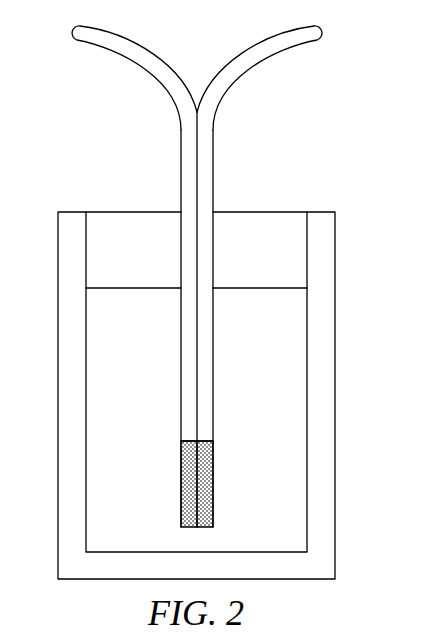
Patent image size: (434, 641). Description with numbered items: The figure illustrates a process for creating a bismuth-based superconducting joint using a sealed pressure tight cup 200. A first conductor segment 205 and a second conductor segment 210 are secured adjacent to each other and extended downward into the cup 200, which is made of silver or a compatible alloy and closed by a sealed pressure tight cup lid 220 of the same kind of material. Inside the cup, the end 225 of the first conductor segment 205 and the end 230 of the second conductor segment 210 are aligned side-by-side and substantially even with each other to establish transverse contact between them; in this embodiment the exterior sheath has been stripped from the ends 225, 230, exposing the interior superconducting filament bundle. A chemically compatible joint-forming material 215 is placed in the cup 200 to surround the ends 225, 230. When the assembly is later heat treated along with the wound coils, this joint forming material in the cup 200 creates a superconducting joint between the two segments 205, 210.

The sealed pressure tight cup 200 is at (322, 247).
The first Bi-2212 conductor segment 205 is at (180, 150).
The second Bi-2212 conductor segment 210 is at (245, 63).
The Bi-2212 chemically compatible material 215 is at (270, 360).
The sealed pressure tight cup lid 220 is at (257, 227).
The end of the first Bi-2212 conductor segment 225 is at (178, 490).
The end of the second Bi-2212 conductor segment 230 is at (215, 475).